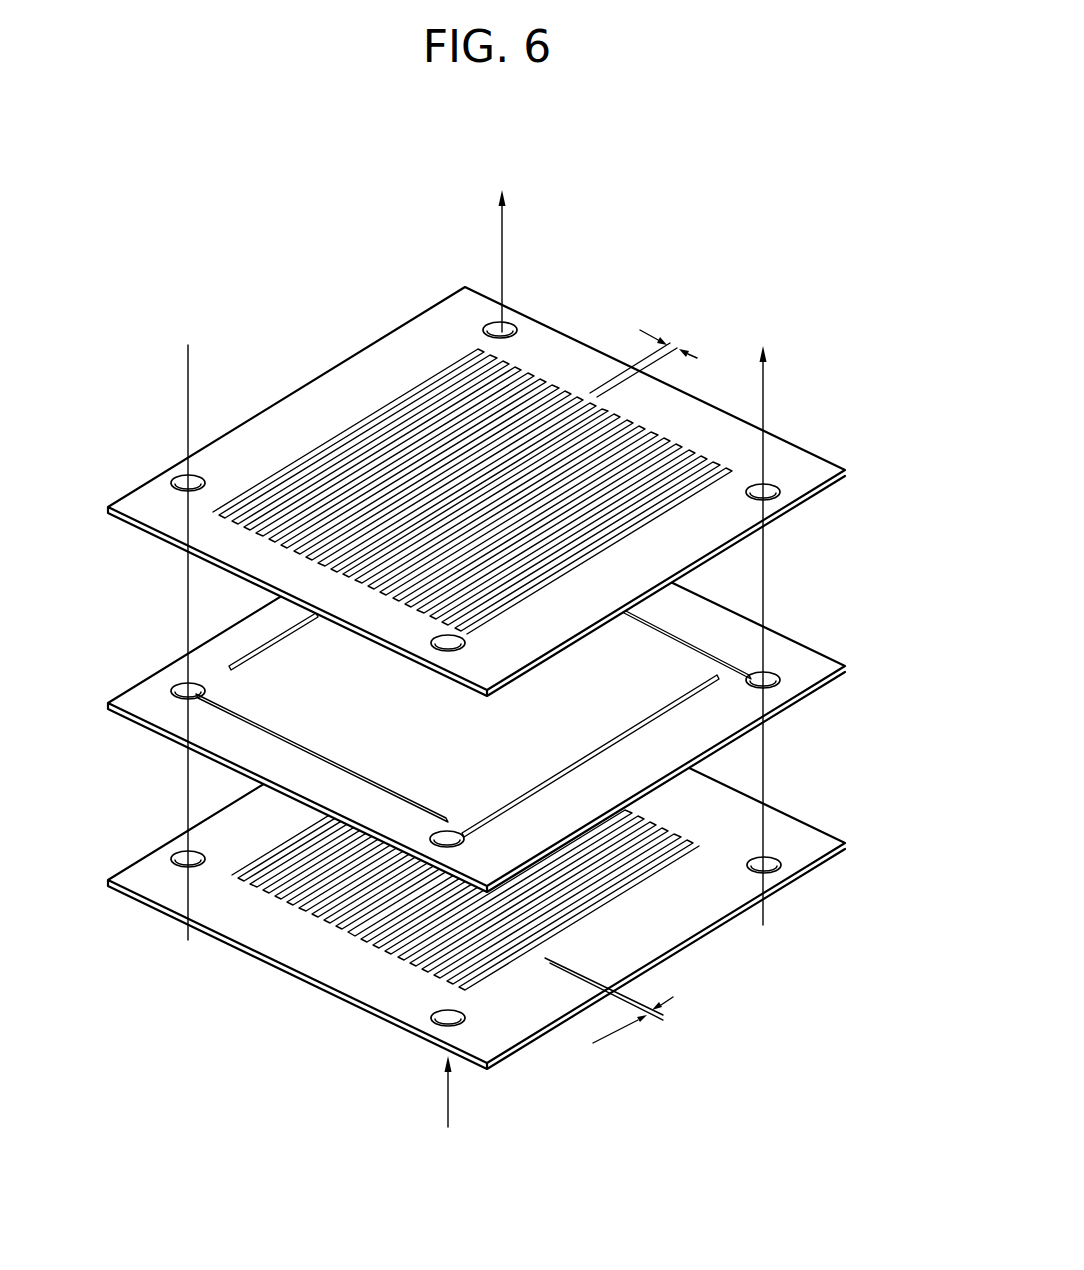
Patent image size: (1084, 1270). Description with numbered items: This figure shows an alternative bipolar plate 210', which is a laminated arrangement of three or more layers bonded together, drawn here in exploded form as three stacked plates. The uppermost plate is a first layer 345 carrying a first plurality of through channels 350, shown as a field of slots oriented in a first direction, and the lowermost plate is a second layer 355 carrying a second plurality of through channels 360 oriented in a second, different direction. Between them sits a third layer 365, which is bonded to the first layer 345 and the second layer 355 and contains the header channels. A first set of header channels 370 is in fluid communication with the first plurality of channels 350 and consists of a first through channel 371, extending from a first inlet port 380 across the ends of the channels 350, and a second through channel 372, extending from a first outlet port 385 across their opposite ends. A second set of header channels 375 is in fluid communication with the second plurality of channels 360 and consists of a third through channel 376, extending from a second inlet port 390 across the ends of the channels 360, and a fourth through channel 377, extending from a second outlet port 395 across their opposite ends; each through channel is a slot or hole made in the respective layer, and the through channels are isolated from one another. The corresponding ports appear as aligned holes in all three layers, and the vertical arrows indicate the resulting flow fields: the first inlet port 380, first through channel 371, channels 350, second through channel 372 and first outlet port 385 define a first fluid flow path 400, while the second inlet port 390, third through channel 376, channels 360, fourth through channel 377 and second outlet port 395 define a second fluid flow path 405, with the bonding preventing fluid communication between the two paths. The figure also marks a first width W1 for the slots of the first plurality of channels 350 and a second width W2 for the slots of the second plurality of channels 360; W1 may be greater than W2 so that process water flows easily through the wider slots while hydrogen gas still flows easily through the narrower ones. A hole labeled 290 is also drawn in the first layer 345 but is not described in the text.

The bipolar plate 210' is at (205, 209).
The through hole 290 is at (438, 642).
The first layer 345 is at (578, 337).
The first plurality of through channels 350 is at (377, 415).
The second layer 355 is at (690, 945).
The second plurality of through channels 360 is at (342, 897).
The third layer 365 is at (833, 658).
The first set of header channels 370 is at (670, 645).
The first through channel 371 is at (330, 757).
The second through channel 372 is at (657, 615).
The second set of header channels 375 is at (263, 661).
The third through channel 376 is at (603, 743).
The fourth through channel 377 is at (280, 633).
The first inlet port 380 is at (182, 688).
The first outlet port 385 is at (768, 670).
The second inlet port 390 is at (447, 837).
The second outlet port 395 is at (487, 327).
The first fluid flow path 400 is at (183, 420).
The second fluid flow path 405 is at (505, 265).
The first width W1 is at (645, 352).
The second width W2 is at (608, 1035).